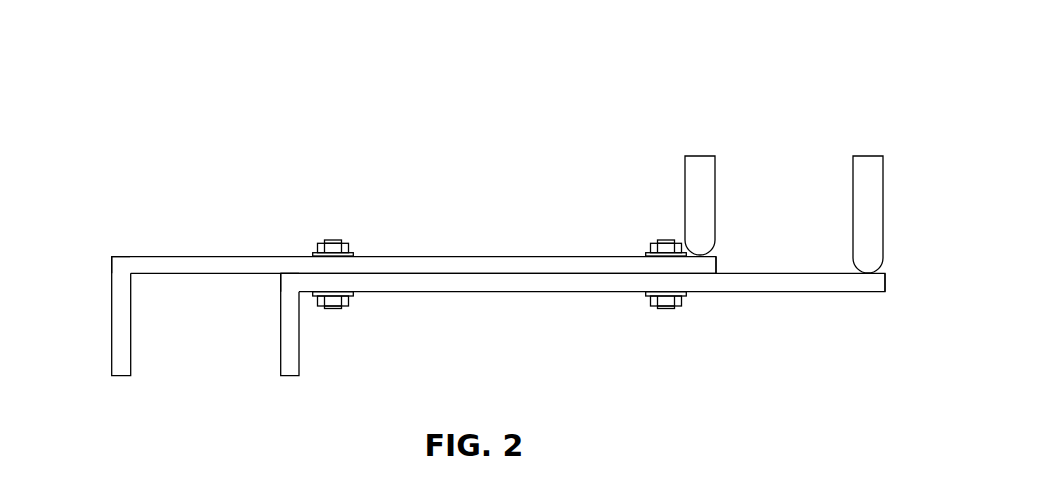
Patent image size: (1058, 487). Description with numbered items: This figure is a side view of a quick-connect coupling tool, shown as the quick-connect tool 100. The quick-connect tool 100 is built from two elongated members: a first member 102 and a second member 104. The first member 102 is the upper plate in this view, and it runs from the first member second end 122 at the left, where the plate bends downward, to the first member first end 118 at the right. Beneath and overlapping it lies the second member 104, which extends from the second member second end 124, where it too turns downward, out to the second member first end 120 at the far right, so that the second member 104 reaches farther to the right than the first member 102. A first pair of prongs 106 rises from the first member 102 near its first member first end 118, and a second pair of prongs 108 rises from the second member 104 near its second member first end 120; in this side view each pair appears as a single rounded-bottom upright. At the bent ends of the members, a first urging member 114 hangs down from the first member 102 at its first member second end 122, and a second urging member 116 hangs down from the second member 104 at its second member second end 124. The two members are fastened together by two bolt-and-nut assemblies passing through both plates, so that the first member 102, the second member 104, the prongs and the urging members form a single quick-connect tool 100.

The quick-connect tool 100 is at (493, 223).
The first member 102 is at (433, 265).
The second member 104 is at (557, 278).
The first pair of prongs 106 is at (685, 197).
The second pair of prongs 108 is at (853, 202).
The first urging member 114 is at (129, 333).
The second urging member 116 is at (302, 343).
The first member first end 118 is at (717, 257).
The second member first end 120 is at (885, 280).
The first member second end 122 is at (110, 265).
The second member second end 124 is at (280, 280).